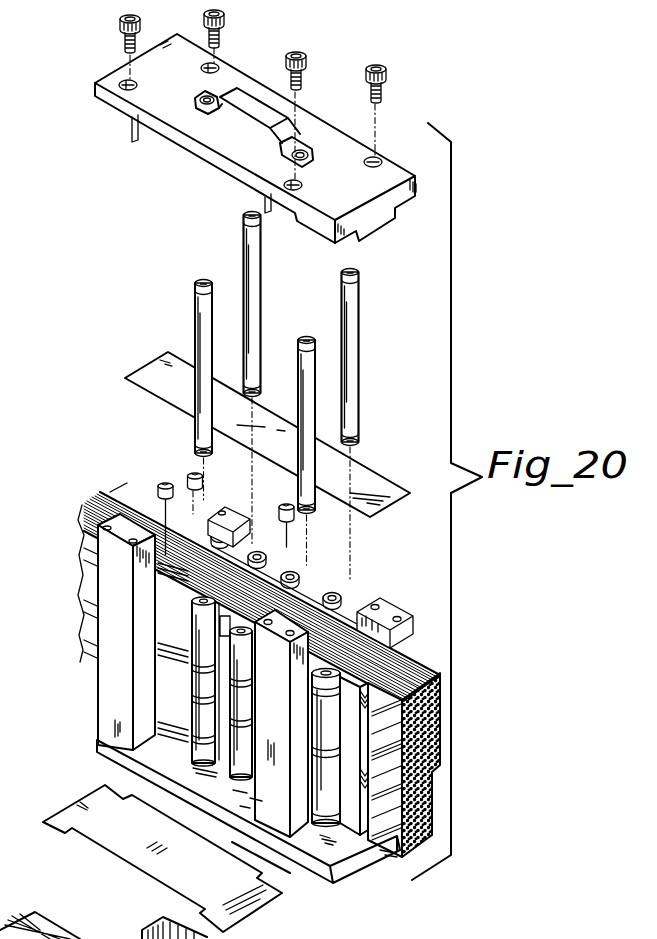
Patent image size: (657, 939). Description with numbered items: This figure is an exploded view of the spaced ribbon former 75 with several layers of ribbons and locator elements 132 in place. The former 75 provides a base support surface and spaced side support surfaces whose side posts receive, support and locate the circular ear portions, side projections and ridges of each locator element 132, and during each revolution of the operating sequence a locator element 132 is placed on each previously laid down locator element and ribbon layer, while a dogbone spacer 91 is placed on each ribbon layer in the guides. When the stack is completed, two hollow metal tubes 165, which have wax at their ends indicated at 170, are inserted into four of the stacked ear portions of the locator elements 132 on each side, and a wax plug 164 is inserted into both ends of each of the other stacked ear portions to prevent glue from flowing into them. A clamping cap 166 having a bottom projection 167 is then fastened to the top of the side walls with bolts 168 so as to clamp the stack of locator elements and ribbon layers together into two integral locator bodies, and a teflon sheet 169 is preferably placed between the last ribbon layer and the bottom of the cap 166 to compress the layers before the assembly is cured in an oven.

The clamping cap 166 is at (147, 98).
The bottom projection 167 is at (383, 232).
The bolts 168 is at (342, 33).
The hollow metal tubes 165 is at (262, 279).
The wax ends 170 is at (196, 288).
The teflon sheet 169 is at (366, 476).
The wax plug 164 is at (162, 481).
The heating element / resistor block R is at (100, 500).
The locator element 132 is at (344, 585).
The spaced ribbon former 75 is at (83, 754).
The dogbone spacer 91 is at (128, 842).